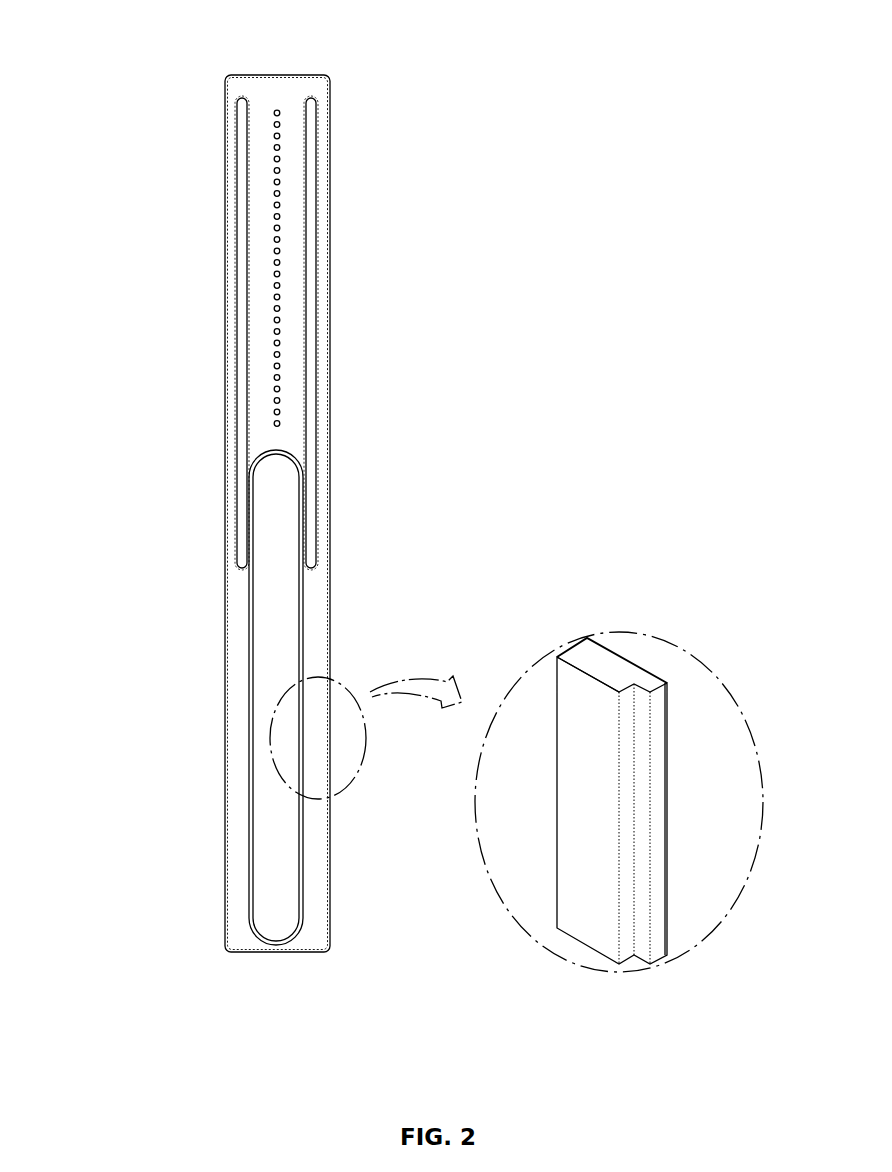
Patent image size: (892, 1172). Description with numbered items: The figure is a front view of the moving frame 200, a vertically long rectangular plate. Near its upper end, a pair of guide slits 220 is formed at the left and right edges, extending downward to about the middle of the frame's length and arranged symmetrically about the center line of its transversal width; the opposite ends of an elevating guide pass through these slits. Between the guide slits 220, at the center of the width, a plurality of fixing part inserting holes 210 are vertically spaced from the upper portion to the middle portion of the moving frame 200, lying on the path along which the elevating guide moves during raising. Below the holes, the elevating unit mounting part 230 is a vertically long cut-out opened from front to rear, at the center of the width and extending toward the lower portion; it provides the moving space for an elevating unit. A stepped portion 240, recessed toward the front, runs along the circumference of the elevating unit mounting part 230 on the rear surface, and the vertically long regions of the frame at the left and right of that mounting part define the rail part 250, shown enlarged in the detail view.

The moving frame 200 is at (206, 73).
The fixing part inserting holes 210 is at (280, 216).
The guide slits 220 is at (241, 281).
The elevating unit mounting part 230 is at (303, 608).
The stepped portion 240 is at (630, 720).
The rail part 250 is at (667, 683).